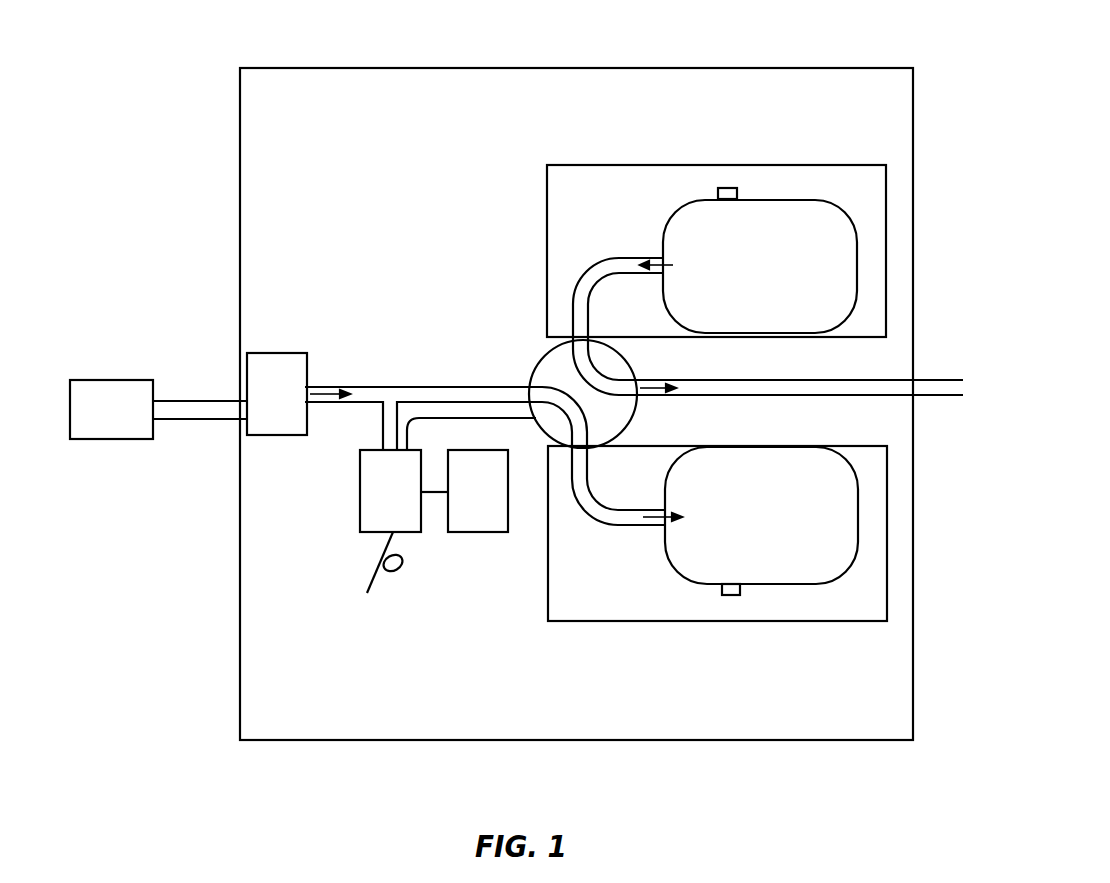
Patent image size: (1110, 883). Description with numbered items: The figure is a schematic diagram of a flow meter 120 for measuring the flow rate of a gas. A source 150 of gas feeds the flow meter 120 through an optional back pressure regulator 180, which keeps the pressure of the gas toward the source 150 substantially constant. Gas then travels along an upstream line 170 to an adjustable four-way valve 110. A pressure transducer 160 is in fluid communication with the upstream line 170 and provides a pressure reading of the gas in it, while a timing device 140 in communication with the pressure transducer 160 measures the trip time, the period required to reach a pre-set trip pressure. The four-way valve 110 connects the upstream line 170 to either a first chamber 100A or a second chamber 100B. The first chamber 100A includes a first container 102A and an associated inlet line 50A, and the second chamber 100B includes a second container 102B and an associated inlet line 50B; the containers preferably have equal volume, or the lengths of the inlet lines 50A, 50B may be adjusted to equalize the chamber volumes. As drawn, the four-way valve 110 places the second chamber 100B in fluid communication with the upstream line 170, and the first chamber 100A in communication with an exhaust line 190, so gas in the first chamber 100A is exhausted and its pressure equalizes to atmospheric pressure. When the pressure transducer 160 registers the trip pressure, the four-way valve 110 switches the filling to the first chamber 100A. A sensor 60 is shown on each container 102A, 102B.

The flow meter 120 is at (652, 68).
The first chamber 100A is at (682, 165).
The second chamber 100B is at (710, 621).
The first container 102A is at (783, 278).
The second container 102B is at (787, 528).
The sensor 60 is at (718, 194).
The inlet line 50A is at (603, 258).
The inlet line 50B is at (615, 525).
The four-way valve 110 is at (538, 363).
The exhaust line 190 is at (768, 372).
The upstream line 170 is at (388, 395).
The back pressure regulator 180 is at (297, 407).
The source 150 is at (128, 424).
The pressure transducer 160 is at (410, 502).
The timing device 140 is at (497, 502).